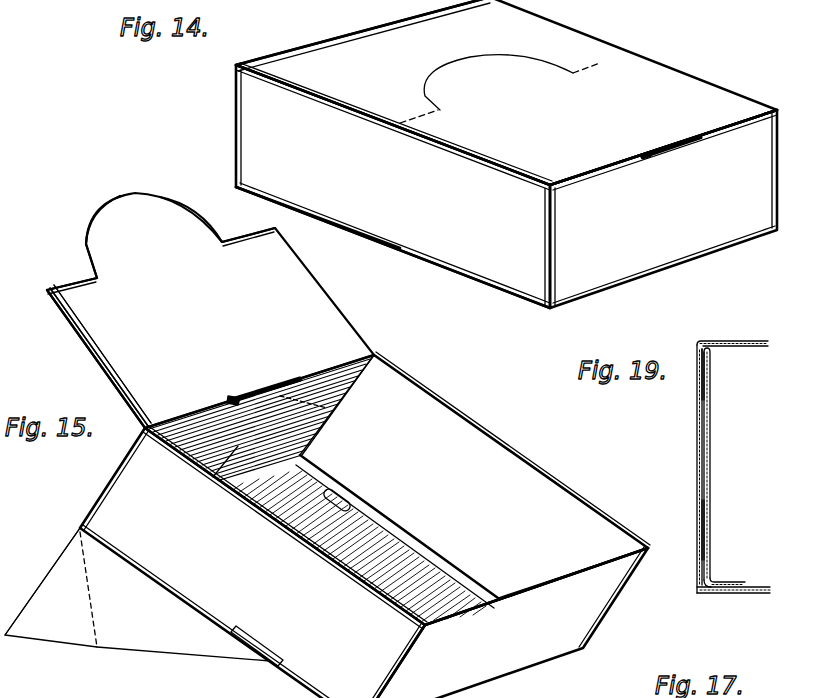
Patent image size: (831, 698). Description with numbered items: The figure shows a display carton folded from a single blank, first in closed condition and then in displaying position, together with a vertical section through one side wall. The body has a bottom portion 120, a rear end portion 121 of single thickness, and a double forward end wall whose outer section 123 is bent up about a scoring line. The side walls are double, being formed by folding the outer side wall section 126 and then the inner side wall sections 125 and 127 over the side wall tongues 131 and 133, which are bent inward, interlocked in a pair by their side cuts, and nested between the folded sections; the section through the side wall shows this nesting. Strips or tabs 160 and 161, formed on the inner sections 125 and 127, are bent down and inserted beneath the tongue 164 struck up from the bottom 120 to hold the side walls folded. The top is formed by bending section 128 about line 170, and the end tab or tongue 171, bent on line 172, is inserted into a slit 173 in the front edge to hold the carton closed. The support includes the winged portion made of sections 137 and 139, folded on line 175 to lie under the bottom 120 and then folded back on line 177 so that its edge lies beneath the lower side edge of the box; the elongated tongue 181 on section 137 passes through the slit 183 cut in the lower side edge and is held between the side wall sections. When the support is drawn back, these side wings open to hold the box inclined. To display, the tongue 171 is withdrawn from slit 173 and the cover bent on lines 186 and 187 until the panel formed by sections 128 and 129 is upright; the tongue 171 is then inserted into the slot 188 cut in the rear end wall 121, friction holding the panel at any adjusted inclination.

In FIG. 15, the bottom portion 120 is at (396, 490).
In FIG. 19, the bottom portion 120 is at (754, 594).
In FIG. 15, the rear end portion 121 is at (211, 475).
In FIG. 14, the forward end wall section 123 is at (663, 209).
In FIG. 15, the forward end wall section 123 is at (502, 622).
In FIG. 15, the side wall section 125 is at (474, 476).
In FIG. 14, the side wall section 126 is at (395, 186).
In FIG. 15, the side wall section 126 is at (252, 563).
In FIG. 19, the side wall section 126 is at (697, 492).
In FIG. 19, the side wall section 127 is at (712, 498).
In FIG. 14, the top section 128 is at (506, 92).
In FIG. 15, the top section 128 is at (94, 358).
In FIG. 14, the top section 129 is at (506, 126).
In FIG. 15, the top section 129 is at (210, 310).
In FIG. 19, the top section 129 is at (742, 332).
In FIG. 19, the side wall tongue 131 is at (706, 405).
In FIG. 19, the side wall tongue 133 is at (699, 527).
In FIG. 14, the support section 137 is at (416, 254).
In FIG. 15, the support section 137 is at (183, 635).
In FIG. 15, the support section 139 is at (51, 587).
In FIG. 15, the strip or tab 160 is at (437, 563).
In FIG. 19, the strip or tab 161 is at (725, 586).
In FIG. 15, the struck-up tongue 164 is at (349, 491).
In FIG. 14, the fold line 170 is at (334, 38).
In FIG. 14, the end tab or tongue 171 is at (681, 143).
In FIG. 15, the end tab or tongue 171 is at (274, 385).
In FIG. 14, the fold line 172 is at (645, 154).
In FIG. 15, the fold line 172 is at (246, 394).
In FIG. 14, the slit 173 is at (669, 150).
In FIG. 15, the slit 173 is at (537, 585).
In FIG. 14, the fold line 175 is at (316, 218).
In FIG. 15, the fold line 175 is at (50, 573).
In FIG. 15, the fold line 177 is at (88, 582).
In FIG. 15, the elongated tongue 181 is at (272, 650).
In FIG. 15, the slit 183 is at (271, 668).
In FIG. 14, the bend line 186 is at (601, 63).
In FIG. 15, the bend line 186 is at (240, 237).
In FIG. 14, the bend line 187 is at (440, 110).
In FIG. 15, the bend line 187 is at (74, 283).
In FIG. 15, the slot 188 is at (334, 410).